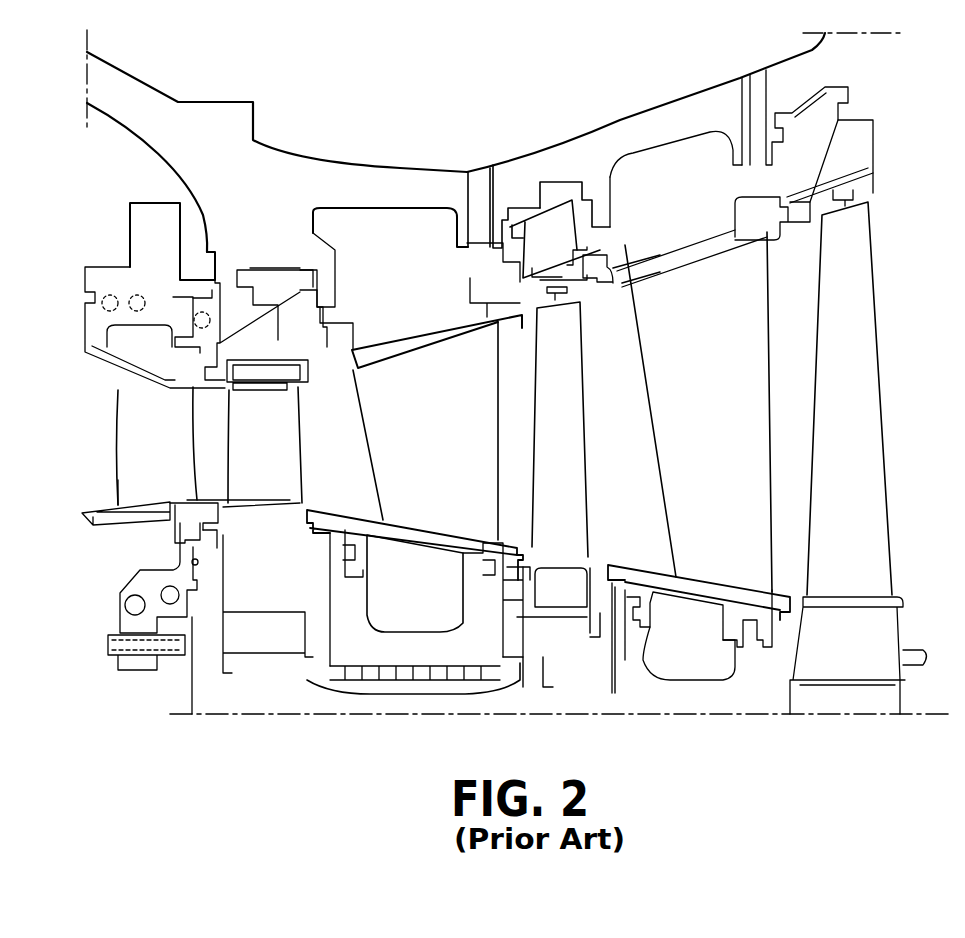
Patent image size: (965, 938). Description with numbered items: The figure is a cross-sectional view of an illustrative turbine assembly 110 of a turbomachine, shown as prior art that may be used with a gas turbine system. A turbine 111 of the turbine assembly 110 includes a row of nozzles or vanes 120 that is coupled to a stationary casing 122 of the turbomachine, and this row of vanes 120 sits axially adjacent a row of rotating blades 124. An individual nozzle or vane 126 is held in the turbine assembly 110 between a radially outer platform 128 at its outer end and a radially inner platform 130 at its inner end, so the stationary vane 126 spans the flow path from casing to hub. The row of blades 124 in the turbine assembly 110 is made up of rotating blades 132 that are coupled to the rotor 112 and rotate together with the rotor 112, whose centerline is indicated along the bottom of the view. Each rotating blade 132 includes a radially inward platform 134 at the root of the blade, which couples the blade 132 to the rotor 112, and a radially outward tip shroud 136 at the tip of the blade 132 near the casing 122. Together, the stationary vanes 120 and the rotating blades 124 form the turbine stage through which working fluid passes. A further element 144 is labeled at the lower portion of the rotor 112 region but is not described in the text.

The turbine assembly 110 is at (396, 158).
The turbine 111 is at (622, 270).
The rotor 112 is at (577, 692).
The row of nozzles or vanes 120 is at (437, 305).
The stationary casing 122 is at (257, 210).
The row of rotating blades 124 is at (550, 320).
The nozzle or vane 126 is at (410, 433).
The radially outer platform 128 is at (418, 352).
The radially inner platform 130 is at (478, 543).
The rotating blade 132 is at (553, 434).
The radially inward platform 134 is at (562, 543).
The radially outward tip shroud 136 is at (560, 294).
The rotor disk arm 144 is at (538, 655).